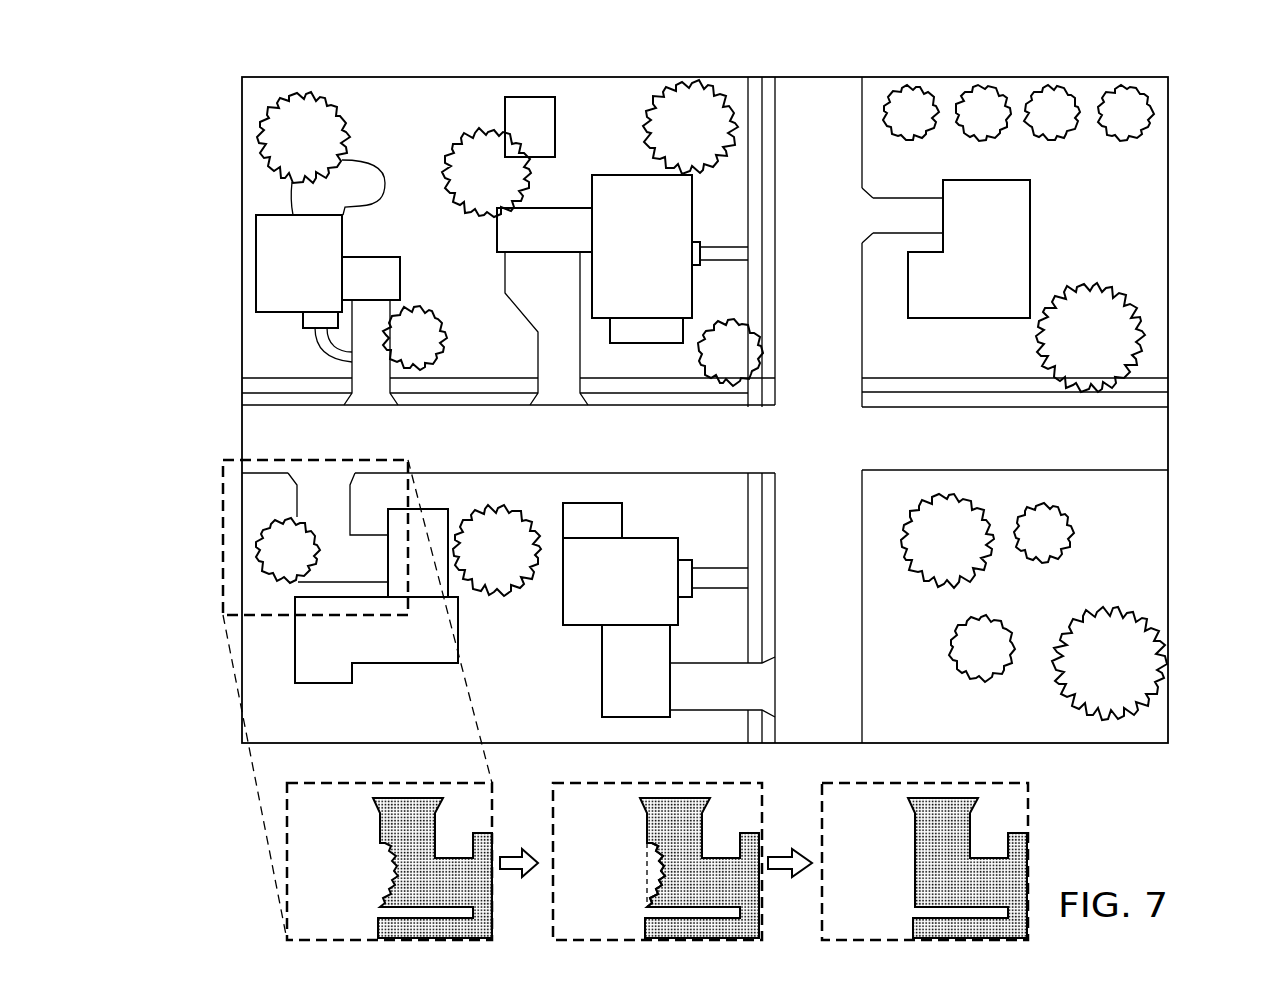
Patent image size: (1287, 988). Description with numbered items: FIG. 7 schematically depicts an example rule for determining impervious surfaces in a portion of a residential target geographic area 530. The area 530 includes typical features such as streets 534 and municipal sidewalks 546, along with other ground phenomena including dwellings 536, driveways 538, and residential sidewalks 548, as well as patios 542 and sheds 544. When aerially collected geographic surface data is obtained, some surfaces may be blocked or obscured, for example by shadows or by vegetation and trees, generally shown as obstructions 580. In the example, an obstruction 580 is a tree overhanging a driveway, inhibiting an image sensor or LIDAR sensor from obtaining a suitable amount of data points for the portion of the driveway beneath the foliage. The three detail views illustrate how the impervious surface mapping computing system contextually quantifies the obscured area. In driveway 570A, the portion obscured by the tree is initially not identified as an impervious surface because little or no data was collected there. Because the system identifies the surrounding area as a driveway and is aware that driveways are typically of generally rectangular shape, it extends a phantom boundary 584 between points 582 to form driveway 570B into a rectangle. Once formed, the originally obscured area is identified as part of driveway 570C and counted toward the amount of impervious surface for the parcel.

The target geographic area 530 is at (1174, 192).
The streets 534 is at (818, 87).
The dwellings 536 is at (278, 279).
The driveways 538 is at (327, 490).
The patios 542 is at (367, 172).
The sheds 544 is at (545, 125).
The municipal sidewalks 546 is at (663, 378).
The residential sidewalks 548 is at (328, 347).
The obstruction 580 is at (257, 550).
The driveway 570A is at (378, 827).
The driveway 570B is at (647, 818).
The driveway 570C is at (915, 858).
The points 582 is at (648, 843).
The phantom boundary 584 is at (648, 876).